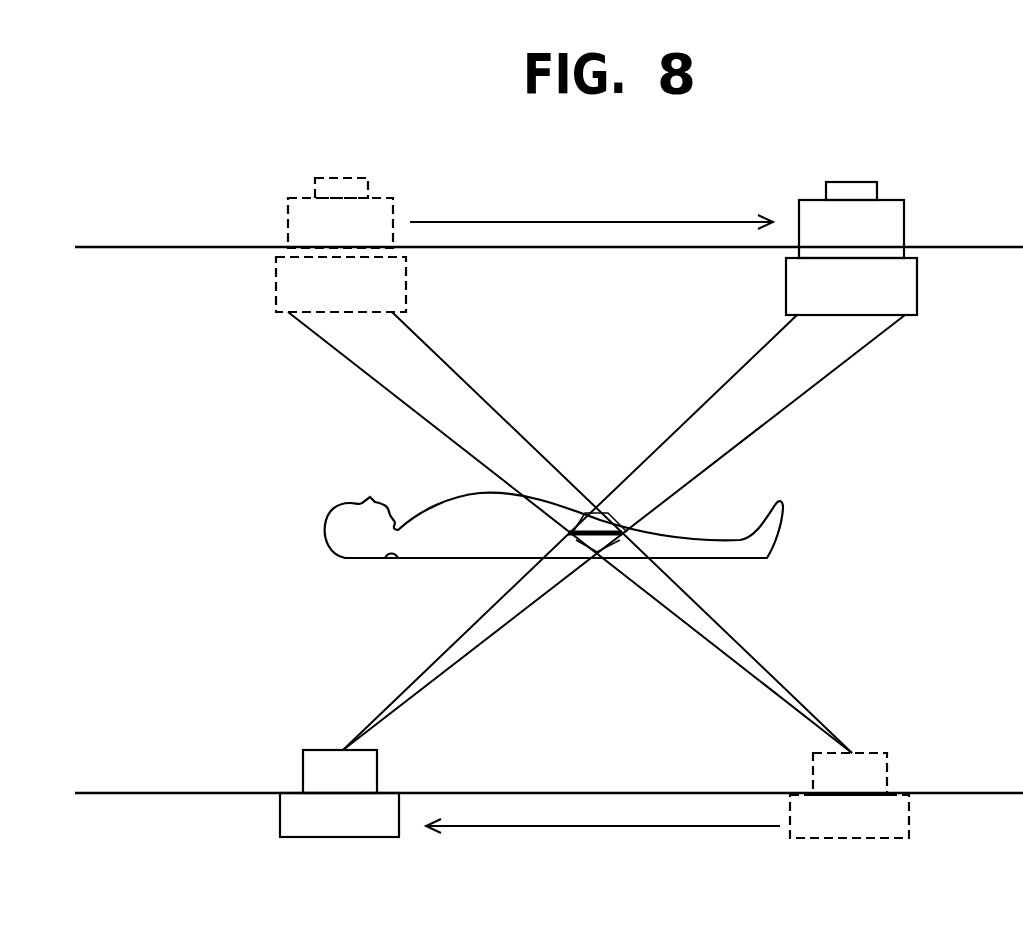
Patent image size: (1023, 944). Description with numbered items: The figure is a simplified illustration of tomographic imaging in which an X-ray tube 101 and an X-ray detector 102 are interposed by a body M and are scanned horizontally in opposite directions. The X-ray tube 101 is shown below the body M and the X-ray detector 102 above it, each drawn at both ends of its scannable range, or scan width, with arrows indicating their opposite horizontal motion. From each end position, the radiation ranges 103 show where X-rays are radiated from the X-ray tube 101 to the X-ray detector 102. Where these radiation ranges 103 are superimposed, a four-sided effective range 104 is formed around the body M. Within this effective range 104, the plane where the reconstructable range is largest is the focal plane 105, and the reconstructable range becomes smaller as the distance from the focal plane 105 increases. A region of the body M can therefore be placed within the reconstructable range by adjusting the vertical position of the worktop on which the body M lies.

The X-ray tube 101 is at (310, 777).
The X-ray detector 102 is at (277, 271).
The radiation ranges 103 is at (643, 475).
The effective range 104 is at (580, 546).
The focal plane 105 is at (617, 543).
The body M is at (686, 554).